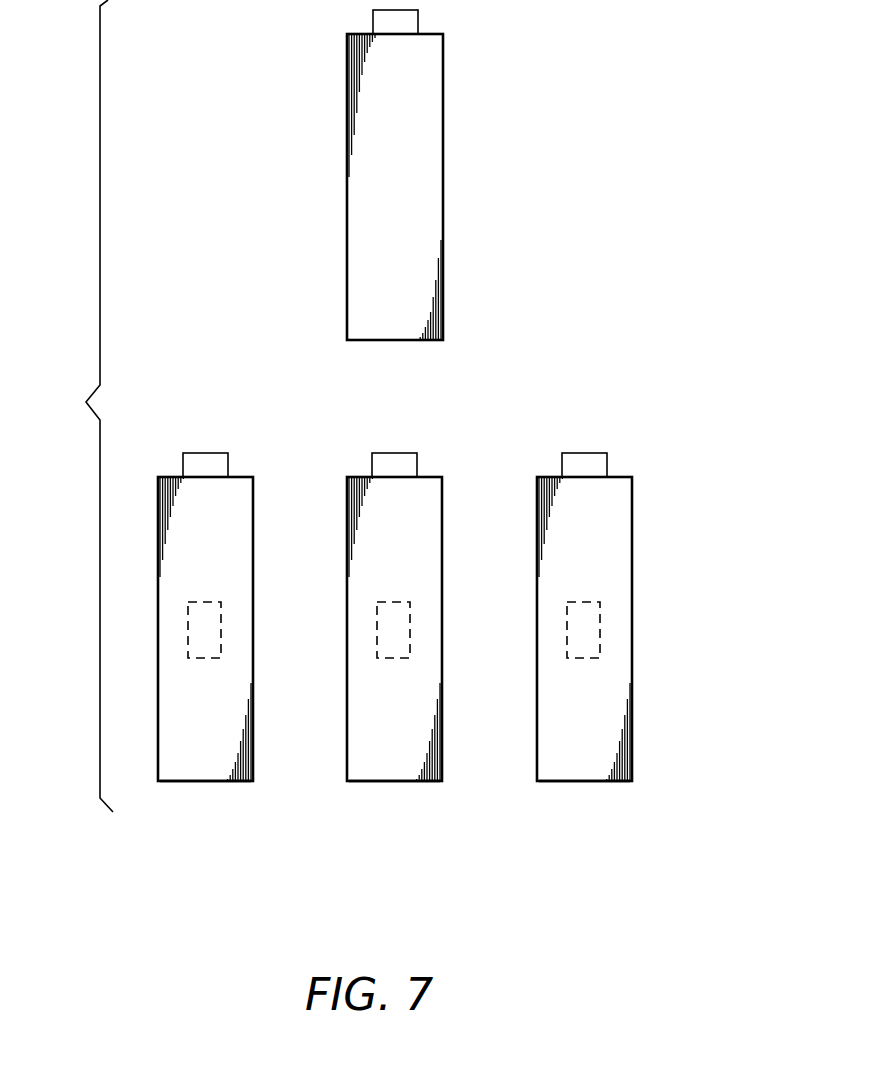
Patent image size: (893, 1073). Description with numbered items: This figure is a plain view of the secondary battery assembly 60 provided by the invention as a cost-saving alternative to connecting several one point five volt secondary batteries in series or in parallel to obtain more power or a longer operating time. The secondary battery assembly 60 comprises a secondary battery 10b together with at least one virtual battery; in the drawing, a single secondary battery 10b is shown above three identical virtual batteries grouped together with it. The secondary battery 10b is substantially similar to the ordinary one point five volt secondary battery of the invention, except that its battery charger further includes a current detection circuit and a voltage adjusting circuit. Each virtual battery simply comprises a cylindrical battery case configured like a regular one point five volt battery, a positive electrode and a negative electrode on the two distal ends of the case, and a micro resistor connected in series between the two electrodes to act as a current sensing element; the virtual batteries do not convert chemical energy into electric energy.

The secondary battery 10b is at (445, 188).
The secondary battery assembly 60 is at (76, 406).